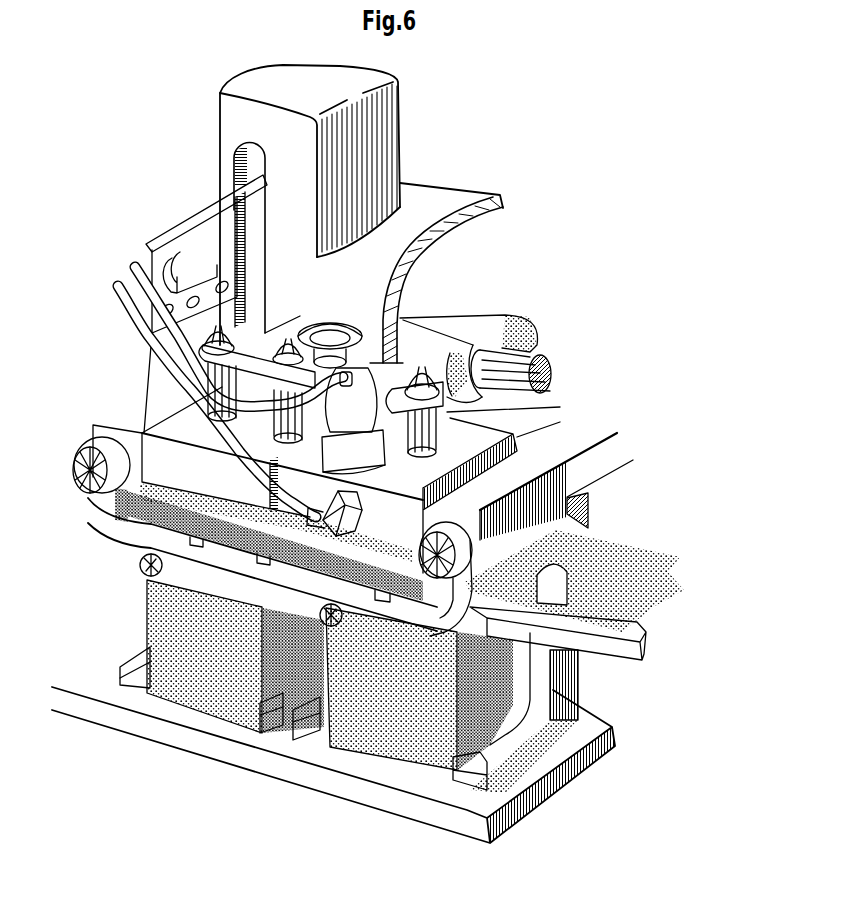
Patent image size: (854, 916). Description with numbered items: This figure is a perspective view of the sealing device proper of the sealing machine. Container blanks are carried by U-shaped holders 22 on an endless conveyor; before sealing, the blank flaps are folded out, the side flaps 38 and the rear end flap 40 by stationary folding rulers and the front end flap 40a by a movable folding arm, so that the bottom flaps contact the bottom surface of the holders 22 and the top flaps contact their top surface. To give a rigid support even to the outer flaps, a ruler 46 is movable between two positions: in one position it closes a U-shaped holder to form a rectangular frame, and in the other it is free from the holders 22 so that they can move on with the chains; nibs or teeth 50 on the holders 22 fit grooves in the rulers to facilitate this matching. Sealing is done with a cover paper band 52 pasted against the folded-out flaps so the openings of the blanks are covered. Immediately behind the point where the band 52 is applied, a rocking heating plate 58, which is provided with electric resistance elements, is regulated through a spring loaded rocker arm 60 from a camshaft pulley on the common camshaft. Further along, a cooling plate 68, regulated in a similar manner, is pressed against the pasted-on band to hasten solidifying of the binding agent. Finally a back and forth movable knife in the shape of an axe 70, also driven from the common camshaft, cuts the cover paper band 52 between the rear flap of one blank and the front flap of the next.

The holders 22 is at (312, 717).
The side flap 38 is at (133, 530).
The rear end flap 40 is at (90, 512).
The front end flap 40a is at (265, 491).
The ruler 46 is at (613, 647).
The nibs or teeth 50 is at (122, 673).
The cover paper band 52 is at (612, 556).
The rocking heating plate 58 is at (490, 433).
The spring loaded rocker arm 60 is at (224, 752).
The cooling plate 68 is at (155, 452).
The axe 70 is at (148, 374).